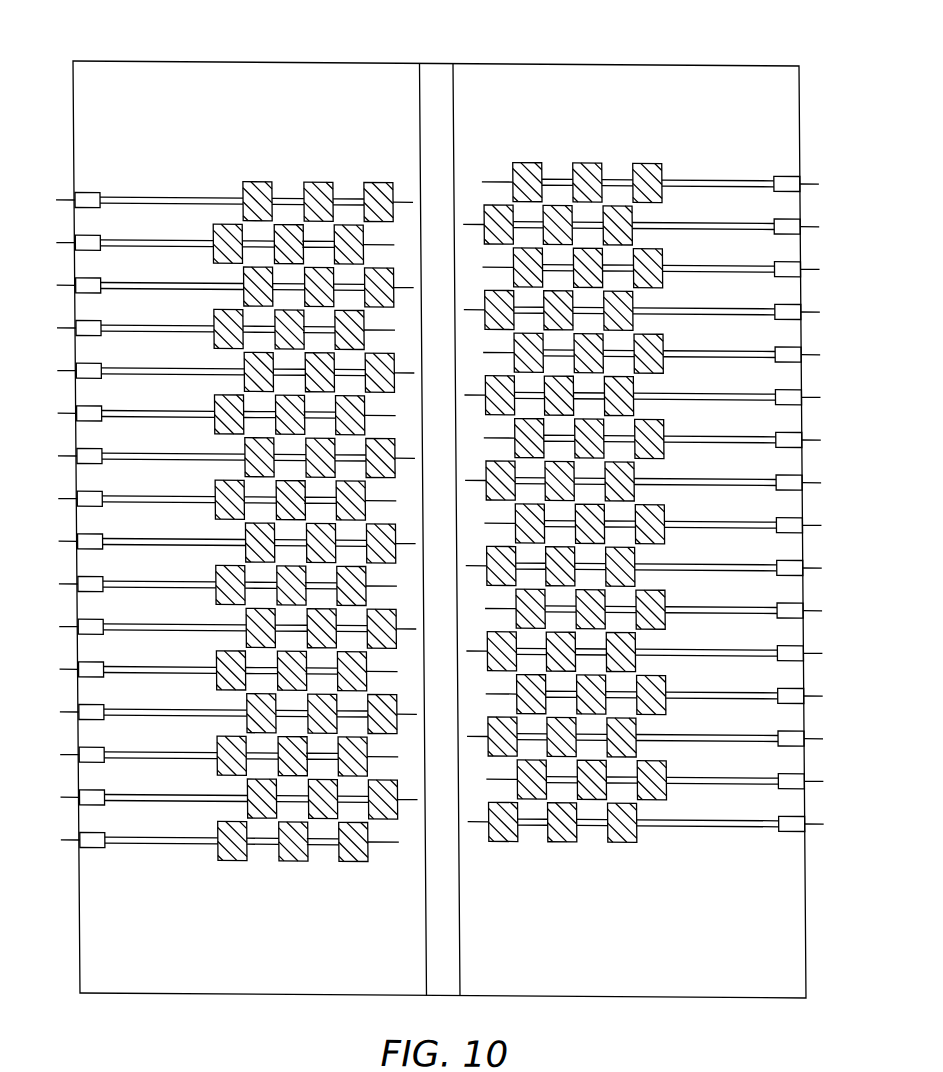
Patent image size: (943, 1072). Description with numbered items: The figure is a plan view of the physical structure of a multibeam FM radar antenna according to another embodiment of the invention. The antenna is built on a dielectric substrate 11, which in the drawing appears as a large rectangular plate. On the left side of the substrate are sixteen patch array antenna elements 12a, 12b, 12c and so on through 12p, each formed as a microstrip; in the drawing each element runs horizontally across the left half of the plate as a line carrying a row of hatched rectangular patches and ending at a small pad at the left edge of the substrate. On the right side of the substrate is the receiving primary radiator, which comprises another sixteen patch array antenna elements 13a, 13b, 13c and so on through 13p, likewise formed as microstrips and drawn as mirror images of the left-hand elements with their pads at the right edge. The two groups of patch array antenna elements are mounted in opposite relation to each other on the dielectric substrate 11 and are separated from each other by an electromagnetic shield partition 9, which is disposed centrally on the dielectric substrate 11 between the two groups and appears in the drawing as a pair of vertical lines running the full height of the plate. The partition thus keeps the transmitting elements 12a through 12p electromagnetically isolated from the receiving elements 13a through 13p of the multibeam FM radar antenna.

The electromagnetic shield partition 9 is at (435, 77).
The dielectric substrate 11 is at (764, 78).
The patch array antenna element 12a is at (103, 195).
The patch array antenna element 12b is at (103, 238).
The patch array antenna element 12c is at (103, 280).
The patch array antenna element 12p is at (105, 835).
The patch array antenna element 13a is at (760, 175).
The patch array antenna element 13b is at (760, 218).
The patch array antenna element 13c is at (760, 260).
The patch array antenna element 13p is at (760, 815).